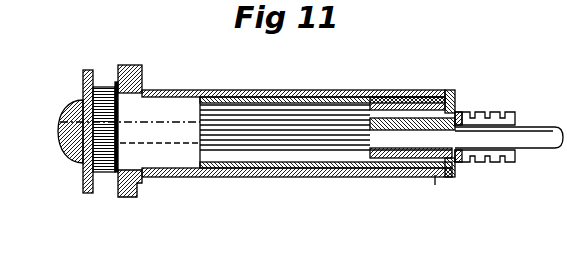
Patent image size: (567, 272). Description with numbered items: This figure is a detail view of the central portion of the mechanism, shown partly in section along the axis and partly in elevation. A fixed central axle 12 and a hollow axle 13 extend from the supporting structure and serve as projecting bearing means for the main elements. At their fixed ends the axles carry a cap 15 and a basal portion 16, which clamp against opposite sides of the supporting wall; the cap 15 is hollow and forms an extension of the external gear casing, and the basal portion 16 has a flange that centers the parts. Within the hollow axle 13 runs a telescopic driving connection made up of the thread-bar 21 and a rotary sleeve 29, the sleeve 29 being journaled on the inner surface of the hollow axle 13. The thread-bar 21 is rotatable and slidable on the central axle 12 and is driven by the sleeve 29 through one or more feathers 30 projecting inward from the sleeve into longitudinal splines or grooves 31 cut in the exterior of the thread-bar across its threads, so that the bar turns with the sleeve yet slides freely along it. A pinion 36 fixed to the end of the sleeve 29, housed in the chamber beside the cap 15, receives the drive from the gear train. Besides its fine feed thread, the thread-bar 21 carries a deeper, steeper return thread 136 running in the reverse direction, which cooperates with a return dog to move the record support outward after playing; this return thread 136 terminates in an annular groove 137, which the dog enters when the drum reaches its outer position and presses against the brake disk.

The central axle 12 is at (413, 93).
The hollow axle 13 is at (337, 178).
The cap 15 is at (86, 182).
The basal portion 16 is at (143, 182).
The thread-bar 21 is at (495, 163).
The rotary sleeve 29 is at (276, 163).
The feather 30 is at (386, 106).
The spline 31 is at (490, 112).
The pinion 36 is at (104, 172).
The return thread 136 is at (461, 112).
The annular groove 137 is at (432, 185).